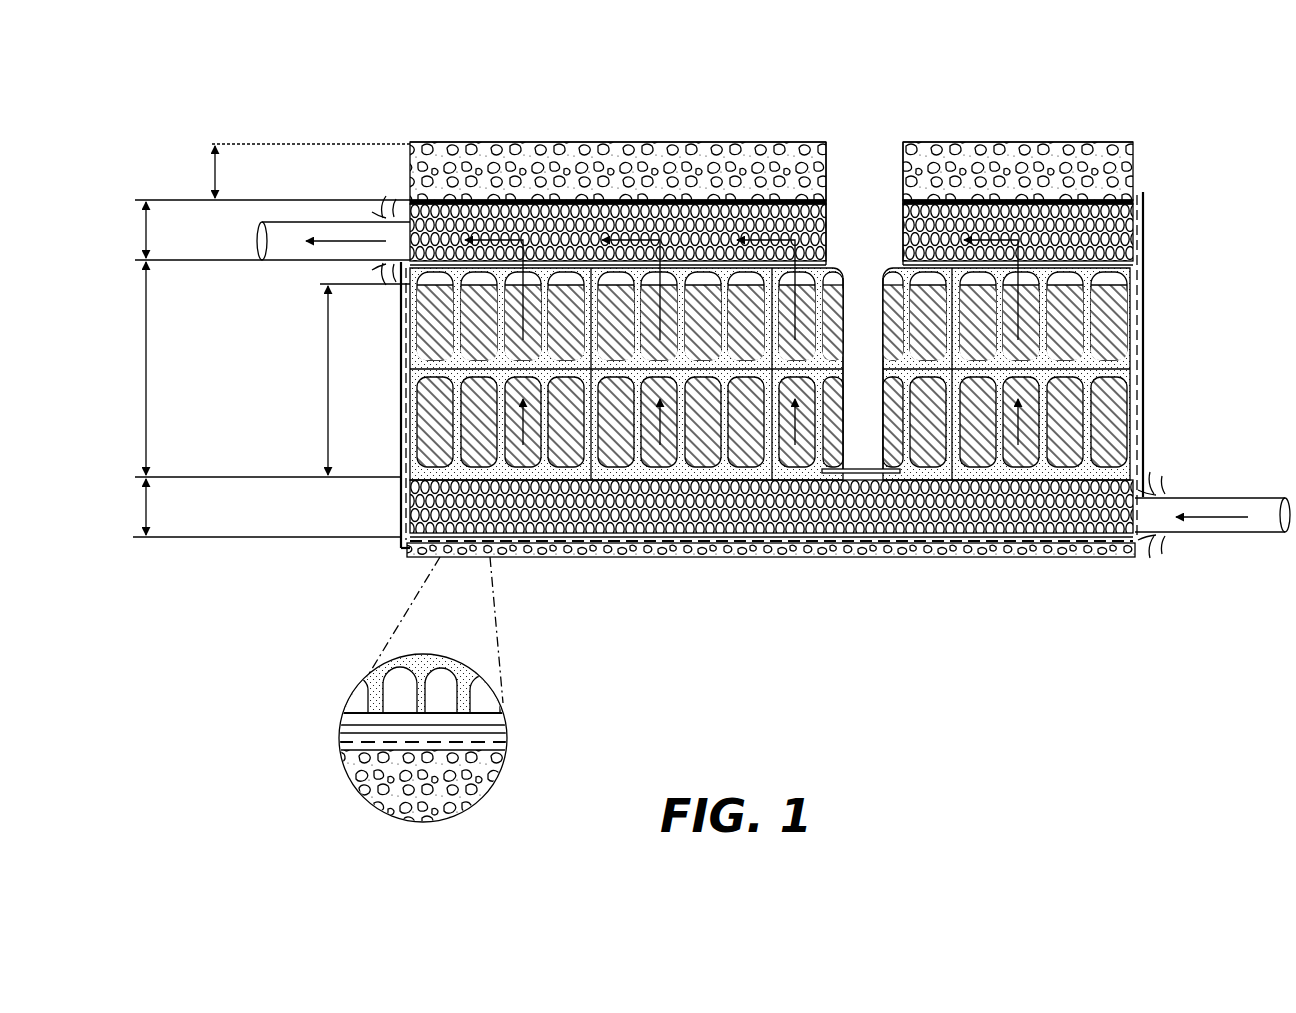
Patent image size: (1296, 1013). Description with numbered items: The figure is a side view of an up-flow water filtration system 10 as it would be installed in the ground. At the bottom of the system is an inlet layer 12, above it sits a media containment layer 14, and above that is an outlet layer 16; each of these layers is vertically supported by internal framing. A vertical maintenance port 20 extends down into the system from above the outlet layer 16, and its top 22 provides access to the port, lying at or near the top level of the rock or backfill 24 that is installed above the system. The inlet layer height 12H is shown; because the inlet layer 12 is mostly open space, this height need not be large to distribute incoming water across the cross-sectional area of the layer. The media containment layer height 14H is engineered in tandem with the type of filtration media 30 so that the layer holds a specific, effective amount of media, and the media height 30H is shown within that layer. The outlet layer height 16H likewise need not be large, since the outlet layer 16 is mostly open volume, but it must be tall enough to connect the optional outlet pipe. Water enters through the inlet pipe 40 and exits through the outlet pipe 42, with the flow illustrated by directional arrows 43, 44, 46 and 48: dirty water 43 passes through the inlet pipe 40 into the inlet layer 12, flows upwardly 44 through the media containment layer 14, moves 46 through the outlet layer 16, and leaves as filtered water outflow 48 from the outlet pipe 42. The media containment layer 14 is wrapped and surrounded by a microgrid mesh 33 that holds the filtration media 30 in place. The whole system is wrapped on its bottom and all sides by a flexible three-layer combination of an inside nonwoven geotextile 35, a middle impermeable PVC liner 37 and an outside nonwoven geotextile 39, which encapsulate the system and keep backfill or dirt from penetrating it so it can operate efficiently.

The up-flow water filtration system 10 is at (776, 576).
The inlet layer 12 is at (1060, 547).
The media containment layer 14 is at (1125, 372).
The outlet layer 16 is at (1105, 228).
The vertical maintenance port 20 is at (818, 160).
The top 22 is at (850, 142).
The rock or backfill 24 is at (577, 160).
The filtration media 30 is at (1112, 315).
The microgrid mesh 33 is at (1000, 254).
The inside nonwoven geotextile 35 is at (340, 733).
The middle layer impermeable PVC liner 37 is at (342, 738).
The outside layer of nonwoven geotextile 39 is at (342, 749).
The inlet pipe 40 is at (1273, 498).
The outlet pipe 42 is at (284, 222).
The directional arrow (dirty water inflow) 43 is at (1210, 518).
The directional arrow (upward flow) 44 is at (1013, 437).
The directional arrow (outlet layer flow) 46 is at (500, 238).
The directional arrow (water outflow) 48 is at (338, 240).
The inlet layer height 12H is at (146, 508).
The media containment layer height 14H is at (146, 355).
The outlet layer height 16H is at (146, 233).
The media height 30H is at (328, 372).